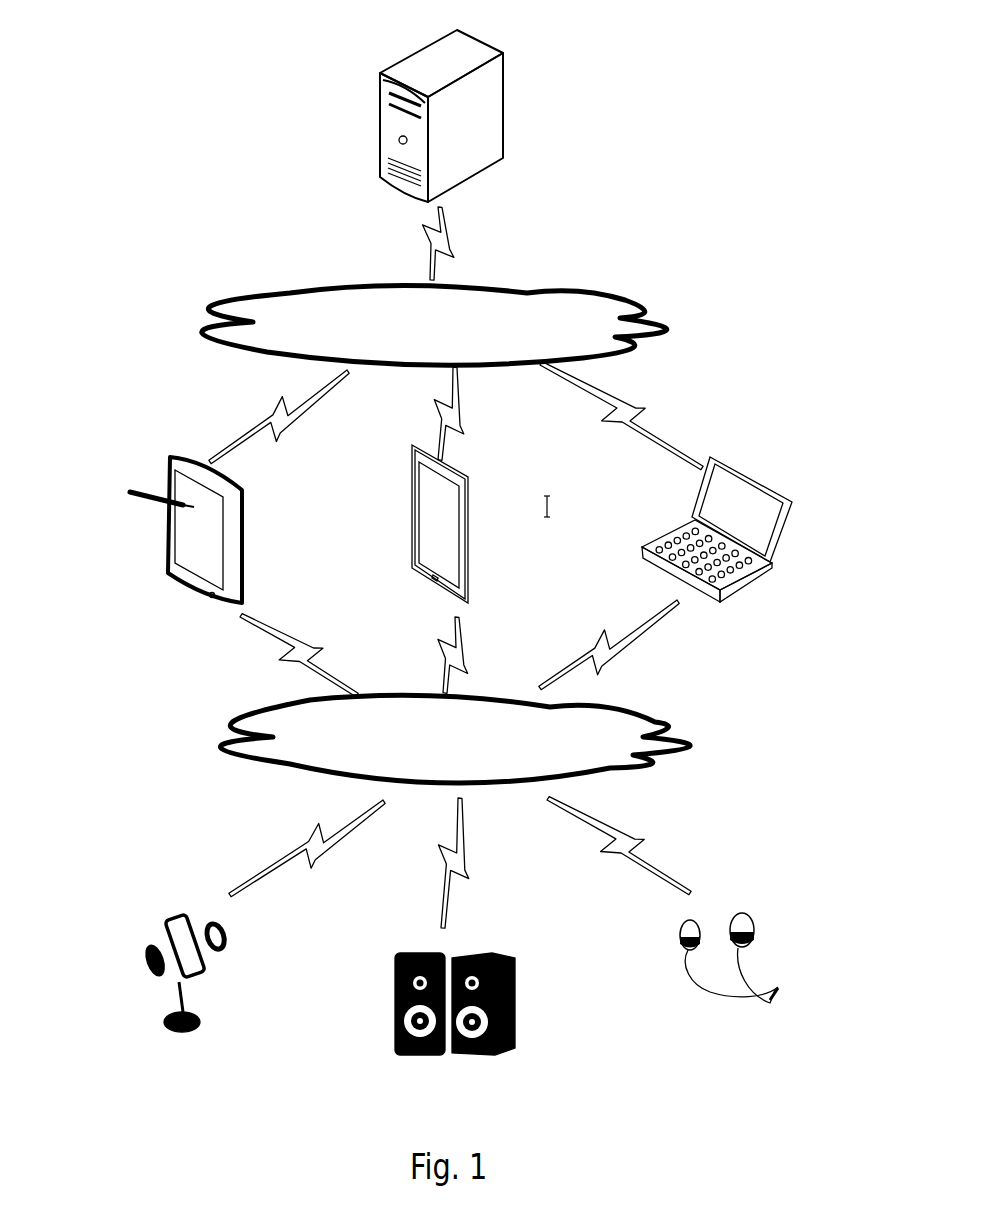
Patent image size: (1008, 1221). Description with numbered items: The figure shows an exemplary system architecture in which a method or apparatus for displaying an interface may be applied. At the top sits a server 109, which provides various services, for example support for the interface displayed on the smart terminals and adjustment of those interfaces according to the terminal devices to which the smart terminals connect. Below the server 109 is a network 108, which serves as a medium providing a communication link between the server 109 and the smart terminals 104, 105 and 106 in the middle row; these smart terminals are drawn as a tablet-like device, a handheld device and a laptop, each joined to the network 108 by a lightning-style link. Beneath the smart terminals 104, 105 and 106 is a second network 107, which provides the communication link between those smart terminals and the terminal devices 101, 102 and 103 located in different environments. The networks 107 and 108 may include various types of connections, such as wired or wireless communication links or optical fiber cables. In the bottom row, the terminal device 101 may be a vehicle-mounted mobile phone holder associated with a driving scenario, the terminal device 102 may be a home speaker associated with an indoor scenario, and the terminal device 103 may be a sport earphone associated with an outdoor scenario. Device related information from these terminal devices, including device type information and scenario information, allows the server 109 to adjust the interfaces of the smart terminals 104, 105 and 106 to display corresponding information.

The terminal device 101 is at (170, 920).
The terminal device 102 is at (515, 967).
The terminal device 103 is at (742, 912).
The smart terminal 104 is at (170, 460).
The smart terminal 105 is at (467, 517).
The smart terminal 106 is at (773, 488).
The network 107 is at (660, 727).
The network 108 is at (620, 300).
The server 109 is at (493, 108).